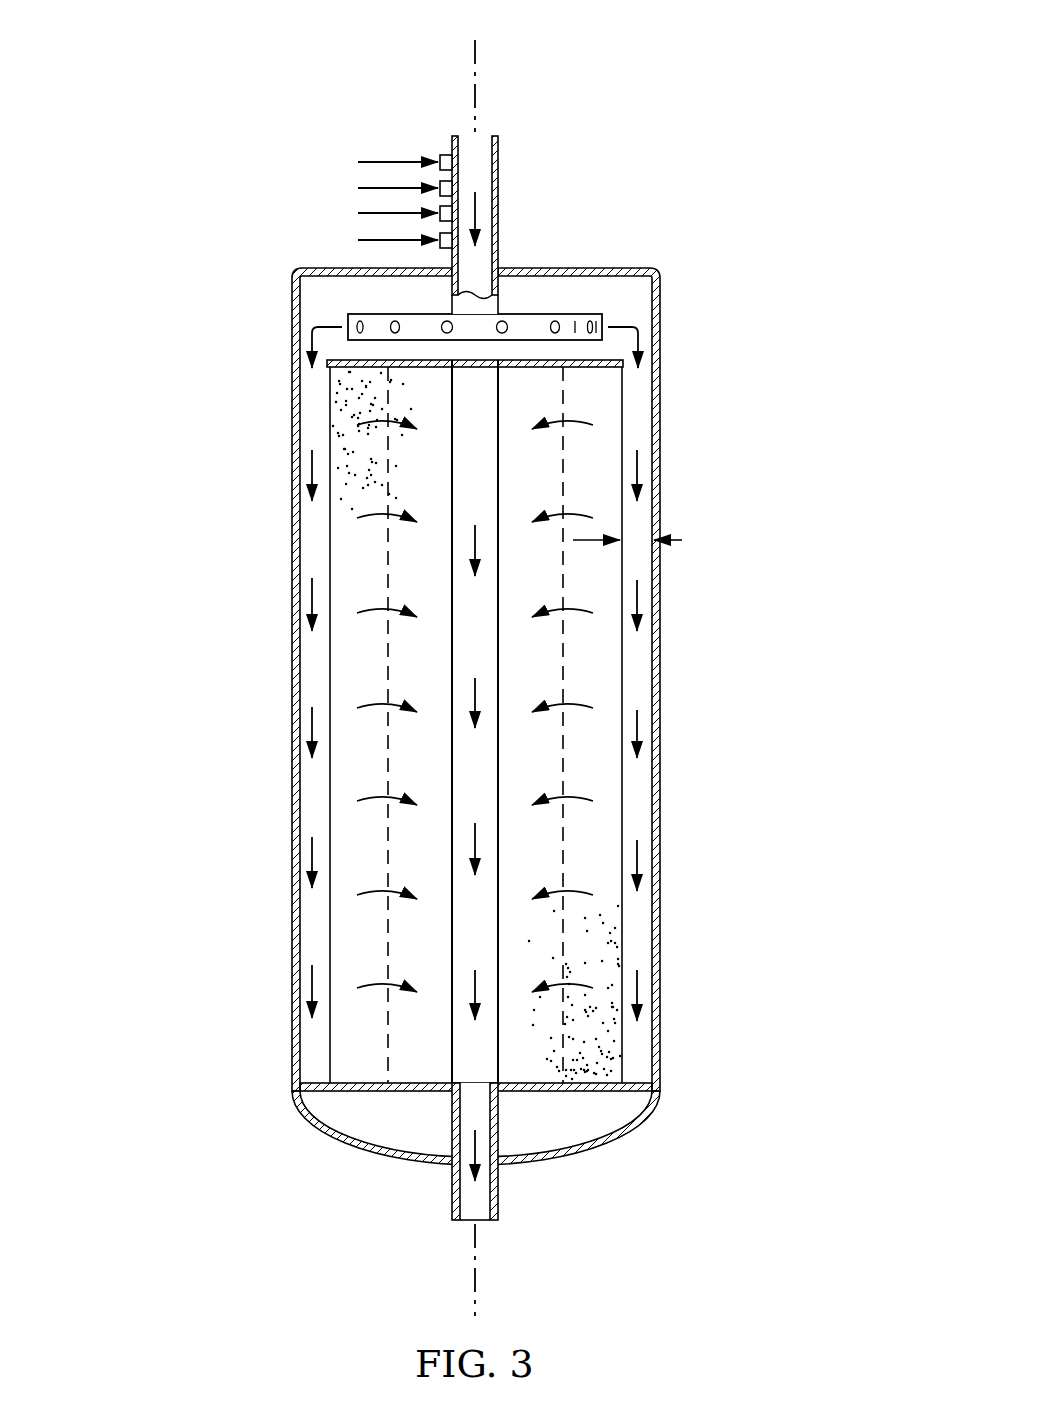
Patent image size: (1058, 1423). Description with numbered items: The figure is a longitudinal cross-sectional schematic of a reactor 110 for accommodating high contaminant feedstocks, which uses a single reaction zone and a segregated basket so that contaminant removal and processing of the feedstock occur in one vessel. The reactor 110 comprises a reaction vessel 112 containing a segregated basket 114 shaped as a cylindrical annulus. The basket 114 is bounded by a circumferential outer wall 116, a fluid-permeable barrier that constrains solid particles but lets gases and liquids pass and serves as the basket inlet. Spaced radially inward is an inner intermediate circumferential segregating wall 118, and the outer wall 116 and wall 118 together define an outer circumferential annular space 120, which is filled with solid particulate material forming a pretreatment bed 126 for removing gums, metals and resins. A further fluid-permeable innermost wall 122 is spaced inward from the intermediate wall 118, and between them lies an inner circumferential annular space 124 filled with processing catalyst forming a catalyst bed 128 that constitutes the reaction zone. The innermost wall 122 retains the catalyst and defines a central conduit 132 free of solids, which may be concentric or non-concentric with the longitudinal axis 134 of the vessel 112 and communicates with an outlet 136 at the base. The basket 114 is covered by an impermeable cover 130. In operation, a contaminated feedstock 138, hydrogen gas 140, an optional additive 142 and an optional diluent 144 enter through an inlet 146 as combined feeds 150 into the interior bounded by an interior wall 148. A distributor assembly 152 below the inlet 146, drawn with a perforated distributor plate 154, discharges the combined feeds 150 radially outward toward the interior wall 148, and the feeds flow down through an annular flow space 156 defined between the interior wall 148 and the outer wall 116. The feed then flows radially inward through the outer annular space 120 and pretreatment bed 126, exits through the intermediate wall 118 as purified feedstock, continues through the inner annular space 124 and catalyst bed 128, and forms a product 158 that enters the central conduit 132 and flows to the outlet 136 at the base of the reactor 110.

The reactor 110 is at (253, 143).
The reaction vessel 112 is at (664, 612).
The segregated basket 114 is at (328, 675).
The outer wall 116 is at (330, 805).
The inner intermediate circumferential segregating wall 118 is at (567, 487).
The outer circumferential annular space 120 is at (587, 667).
The innermost wall 122 is at (452, 670).
The inner circumferential annular space 124 is at (530, 782).
The pretreatment bed 126 is at (370, 550).
The catalyst bed 128 is at (433, 836).
The cover 130 is at (609, 356).
The central conduit 132 is at (476, 772).
The longitudinal axis 134 is at (478, 58).
The outlet 136 is at (452, 1197).
The contaminated feedstock 138 is at (382, 160).
The hydrogen gas 140 is at (368, 185).
The additive 142 is at (368, 213).
The diluent 144 is at (368, 240).
The inlet 146 is at (500, 152).
The interior wall 148 is at (652, 924).
The combined feeds 150 is at (478, 210).
The distributor assembly 152 is at (523, 298).
The distributor plate 154 is at (558, 322).
The annular flow space 156 is at (300, 478).
The product 158 is at (472, 1020).